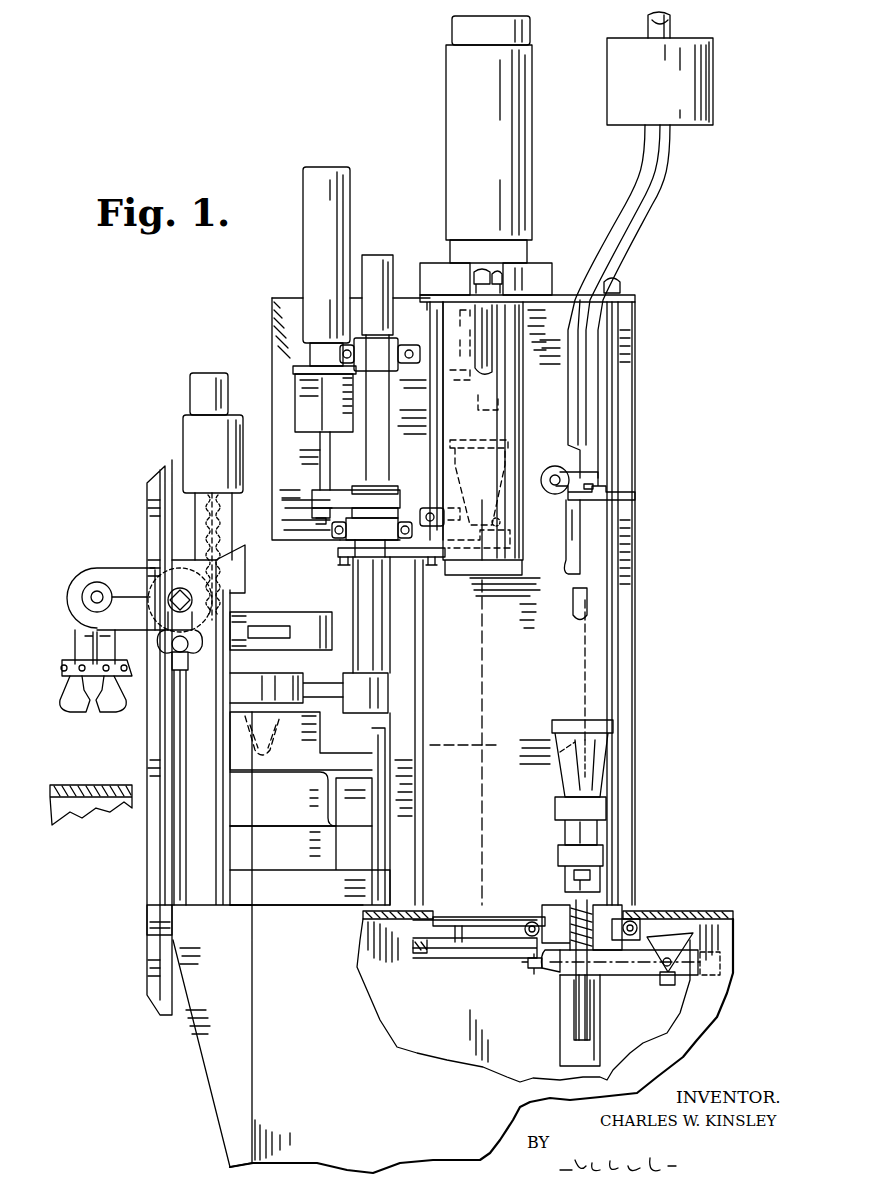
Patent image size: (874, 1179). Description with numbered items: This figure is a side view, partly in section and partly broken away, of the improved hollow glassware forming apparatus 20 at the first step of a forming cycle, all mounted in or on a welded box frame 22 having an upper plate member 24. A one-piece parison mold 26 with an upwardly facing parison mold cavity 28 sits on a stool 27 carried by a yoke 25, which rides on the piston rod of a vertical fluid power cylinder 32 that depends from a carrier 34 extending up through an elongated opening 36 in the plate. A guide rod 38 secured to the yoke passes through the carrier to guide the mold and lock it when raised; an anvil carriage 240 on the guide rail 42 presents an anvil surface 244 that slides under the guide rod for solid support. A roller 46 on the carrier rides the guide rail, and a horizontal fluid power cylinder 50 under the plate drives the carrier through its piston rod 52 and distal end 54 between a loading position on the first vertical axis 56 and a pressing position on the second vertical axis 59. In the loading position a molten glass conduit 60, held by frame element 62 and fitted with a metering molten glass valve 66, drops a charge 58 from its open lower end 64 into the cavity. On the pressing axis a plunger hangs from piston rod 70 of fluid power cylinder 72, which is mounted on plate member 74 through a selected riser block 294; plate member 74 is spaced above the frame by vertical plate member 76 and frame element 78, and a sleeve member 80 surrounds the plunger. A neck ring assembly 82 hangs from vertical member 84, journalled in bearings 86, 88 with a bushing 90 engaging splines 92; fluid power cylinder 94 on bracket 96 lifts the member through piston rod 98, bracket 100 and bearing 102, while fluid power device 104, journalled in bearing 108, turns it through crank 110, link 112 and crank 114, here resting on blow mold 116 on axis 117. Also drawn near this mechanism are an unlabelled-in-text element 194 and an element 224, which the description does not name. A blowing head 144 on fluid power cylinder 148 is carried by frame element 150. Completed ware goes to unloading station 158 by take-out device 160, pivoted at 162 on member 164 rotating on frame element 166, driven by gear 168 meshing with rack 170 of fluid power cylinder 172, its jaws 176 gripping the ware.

The apparatus 20 is at (668, 340).
The box frame 22 is at (694, 913).
The upper plate member 24 is at (642, 910).
The yoke 25 is at (560, 880).
The parison mold 26 is at (606, 768).
The stool 27 is at (600, 830).
The parison mold cavity 28 is at (563, 754).
The fluid power cylinder 32 is at (560, 1028).
The carrier 34 is at (552, 902).
The elongated opening 36 is at (478, 914).
The guide rod 38 is at (588, 1008).
The guide rail 42 is at (490, 950).
The roller 46 is at (526, 934).
The fluid power cylinder 50 is at (640, 966).
The piston rod 52 is at (552, 972).
The distal end 54 is at (534, 960).
The first vertical axis 56 is at (584, 675).
The charge of molten glass 58 is at (572, 608).
The second vertical axis 59 is at (480, 652).
The molten glass conduit 60 is at (574, 408).
The frame element 62 is at (610, 513).
The open lower end 64 is at (582, 558).
The molten glass valve 66 is at (664, 85).
The piston rod 70 is at (492, 410).
The fluid power cylinder 72 is at (446, 94).
The plate member 74 is at (562, 292).
The vertical plate member 76 is at (272, 310).
The frame element 78 is at (478, 330).
The sleeve member 80 is at (526, 340).
The neck ring assembly 82 is at (290, 674).
The vertical member 84 is at (385, 662).
The bearing 86 is at (386, 526).
The bearing 88 is at (384, 344).
The bushing 90 is at (366, 557).
The splines 92 is at (386, 610).
The fluid power cylinder 94 is at (312, 203).
The bracket 96 is at (300, 398).
The piston rod 98 is at (318, 453).
The bracket 100 is at (364, 485).
The bearing 102 is at (386, 490).
The fluid power device 104 is at (430, 415).
The bearing 108 is at (432, 506).
The crank 110 is at (431, 567).
The link 112 is at (409, 558).
The crank 114 is at (342, 568).
The blow mold 116 is at (296, 800).
The axis 117 is at (264, 840).
The blowing head 144 is at (300, 606).
The fluid power cylinder 148 is at (206, 372).
The frame element 150 is at (160, 882).
The unloading station 158 is at (88, 782).
The take-out device 160 is at (76, 640).
The pivot 162 is at (90, 594).
The member 164 is at (112, 566).
The frame element 166 is at (188, 804).
The gear 168 is at (150, 582).
The rack 170 is at (222, 542).
The fluid power cylinder 172 is at (184, 430).
The jaws 176 is at (60, 700).
The block 194 is at (392, 712).
The cylinder 224 is at (376, 258).
The anvil carriage 240 is at (420, 955).
The anvil surface 244 is at (460, 938).
The riser block 294 is at (534, 270).